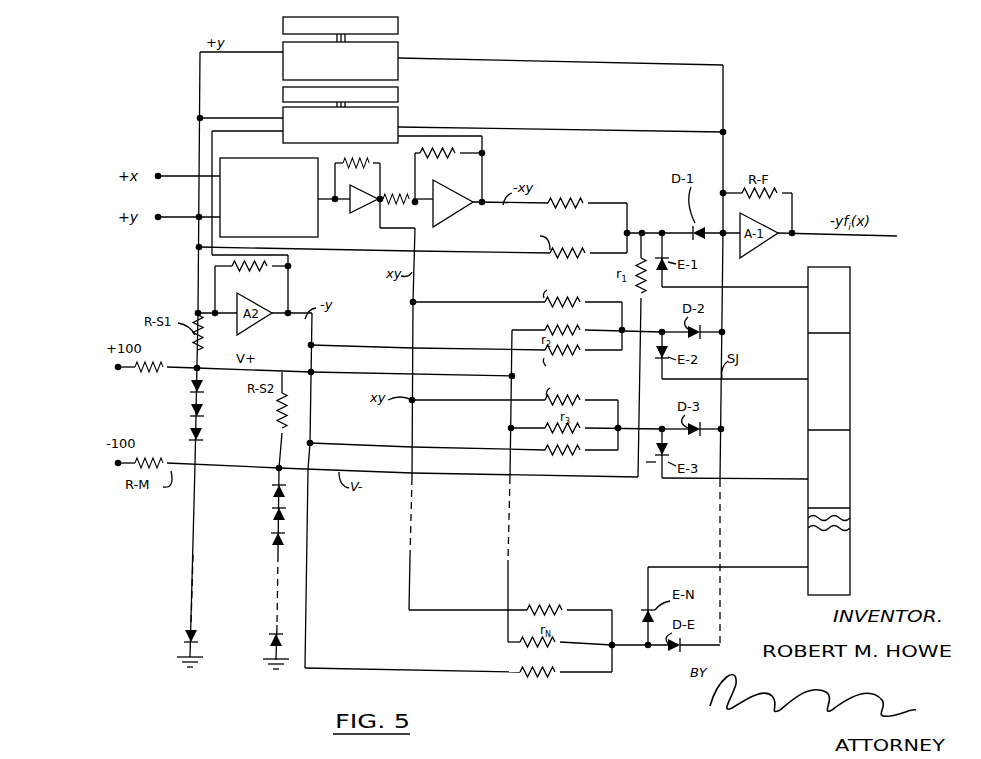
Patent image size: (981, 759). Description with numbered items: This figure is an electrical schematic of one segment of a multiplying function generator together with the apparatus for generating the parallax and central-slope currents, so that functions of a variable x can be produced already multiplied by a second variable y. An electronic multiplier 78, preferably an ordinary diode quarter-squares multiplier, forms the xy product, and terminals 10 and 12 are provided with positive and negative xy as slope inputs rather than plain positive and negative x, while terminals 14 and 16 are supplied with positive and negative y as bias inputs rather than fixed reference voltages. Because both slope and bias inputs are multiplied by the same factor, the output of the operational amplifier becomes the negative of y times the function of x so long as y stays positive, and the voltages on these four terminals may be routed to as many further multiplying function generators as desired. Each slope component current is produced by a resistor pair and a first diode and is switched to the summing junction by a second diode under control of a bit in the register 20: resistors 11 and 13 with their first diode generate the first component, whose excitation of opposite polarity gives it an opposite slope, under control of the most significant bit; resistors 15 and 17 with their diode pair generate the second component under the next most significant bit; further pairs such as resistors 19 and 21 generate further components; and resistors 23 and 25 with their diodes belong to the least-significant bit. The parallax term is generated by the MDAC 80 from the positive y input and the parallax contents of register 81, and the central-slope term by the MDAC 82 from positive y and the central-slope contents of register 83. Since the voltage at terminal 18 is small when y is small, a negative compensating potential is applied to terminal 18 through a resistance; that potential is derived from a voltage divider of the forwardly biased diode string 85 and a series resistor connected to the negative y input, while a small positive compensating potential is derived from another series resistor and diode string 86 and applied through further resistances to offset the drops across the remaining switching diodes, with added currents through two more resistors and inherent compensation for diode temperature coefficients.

The input terminal 10 is at (415, 300).
The resistor 11 is at (561, 209).
The input terminal 12 is at (483, 208).
The resistor 13 is at (562, 258).
The input terminal 14 is at (199, 247).
The resistor 15 is at (565, 306).
The input terminal 16 is at (315, 343).
The resistor 17 is at (582, 356).
The terminal 18 is at (637, 231).
The resistor 19 is at (581, 404).
The register 20 is at (918, 331).
The resistor 21 is at (564, 454).
The resistor 23 is at (576, 611).
The resistor 25 is at (573, 680).
The electronic multiplier 78 is at (253, 158).
The MDAC 80 is at (398, 72).
The register 81 is at (398, 27).
The MDAC 82 is at (398, 117).
The register 83 is at (398, 95).
The diode string 85 is at (262, 520).
The diode string 86 is at (173, 431).